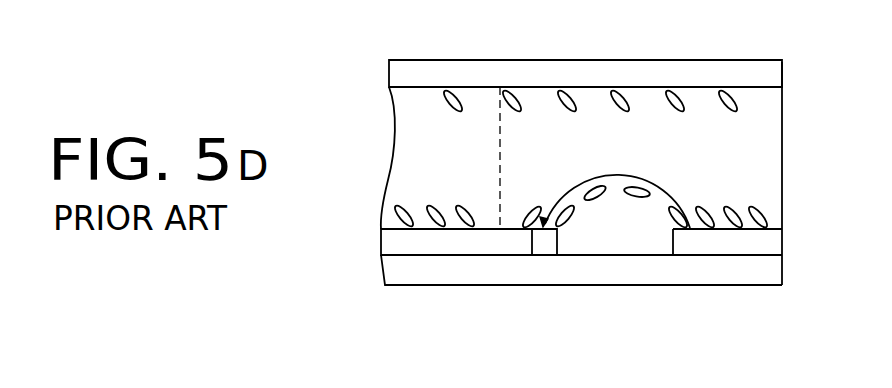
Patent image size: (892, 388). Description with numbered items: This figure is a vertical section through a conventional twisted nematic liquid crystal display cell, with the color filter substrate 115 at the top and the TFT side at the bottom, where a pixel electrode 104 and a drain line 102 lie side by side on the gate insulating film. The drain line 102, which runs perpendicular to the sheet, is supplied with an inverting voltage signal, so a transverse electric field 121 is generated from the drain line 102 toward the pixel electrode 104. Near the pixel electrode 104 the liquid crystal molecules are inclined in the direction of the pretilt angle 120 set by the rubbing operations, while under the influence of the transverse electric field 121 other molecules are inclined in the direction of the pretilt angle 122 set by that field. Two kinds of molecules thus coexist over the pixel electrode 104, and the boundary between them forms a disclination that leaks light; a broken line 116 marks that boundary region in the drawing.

The color filter substrate 115 is at (470, 77).
The domain boundary / pixel boundary 116 is at (503, 156).
The pretilt angle 120 is at (428, 222).
The transverse electric field 121 is at (673, 198).
The pixel electrode 104 is at (415, 239).
The pretilt angle 122 is at (533, 250).
The drain line 102 is at (685, 244).